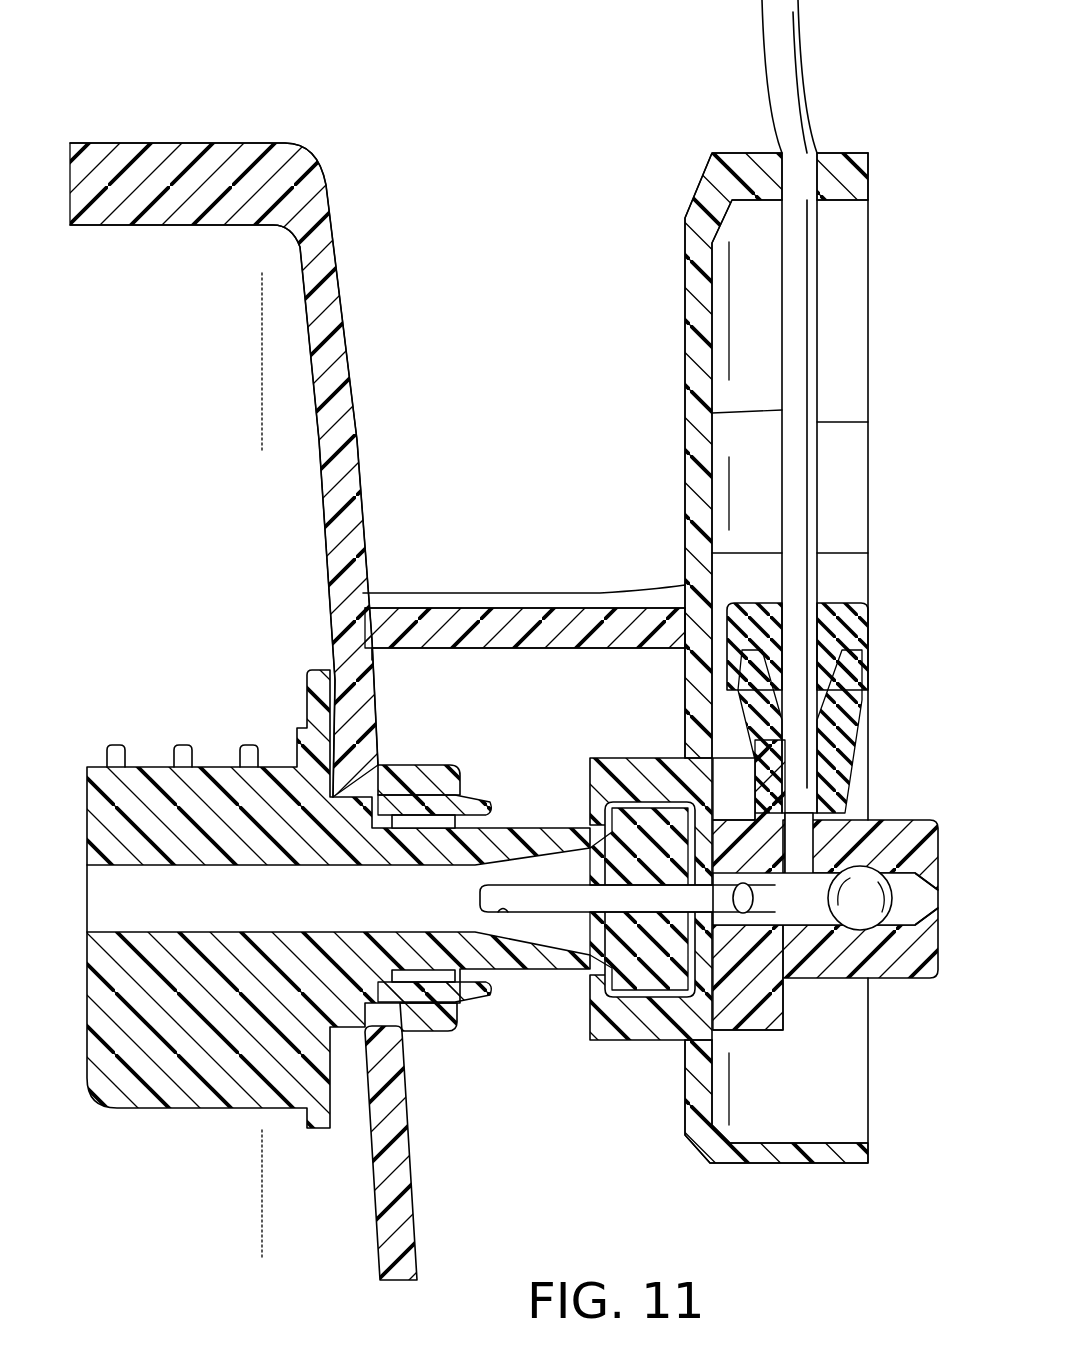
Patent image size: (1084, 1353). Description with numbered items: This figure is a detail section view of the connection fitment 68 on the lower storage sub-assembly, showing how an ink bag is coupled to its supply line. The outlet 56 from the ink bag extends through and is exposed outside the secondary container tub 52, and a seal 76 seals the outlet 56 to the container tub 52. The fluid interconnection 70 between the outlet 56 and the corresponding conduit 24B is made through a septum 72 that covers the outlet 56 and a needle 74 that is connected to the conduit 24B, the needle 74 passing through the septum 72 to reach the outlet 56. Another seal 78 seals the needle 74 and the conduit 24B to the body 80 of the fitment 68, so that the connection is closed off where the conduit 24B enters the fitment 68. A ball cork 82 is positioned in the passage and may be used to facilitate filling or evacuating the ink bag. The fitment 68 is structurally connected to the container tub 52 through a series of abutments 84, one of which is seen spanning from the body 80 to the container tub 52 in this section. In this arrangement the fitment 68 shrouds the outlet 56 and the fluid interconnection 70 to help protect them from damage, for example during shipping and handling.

The conduit 24B is at (790, 89).
The secondary container tub 52 is at (348, 468).
The outlet 56 is at (140, 768).
The connection fitment 68 is at (905, 582).
The fluid interconnection 70 is at (640, 1074).
The septum 72 is at (620, 915).
The needle 74 is at (495, 897).
The seal 76 is at (375, 766).
The seal 78 is at (858, 630).
The body 80 is at (700, 298).
The ball cork 82 is at (873, 890).
The abutments 84 is at (548, 606).